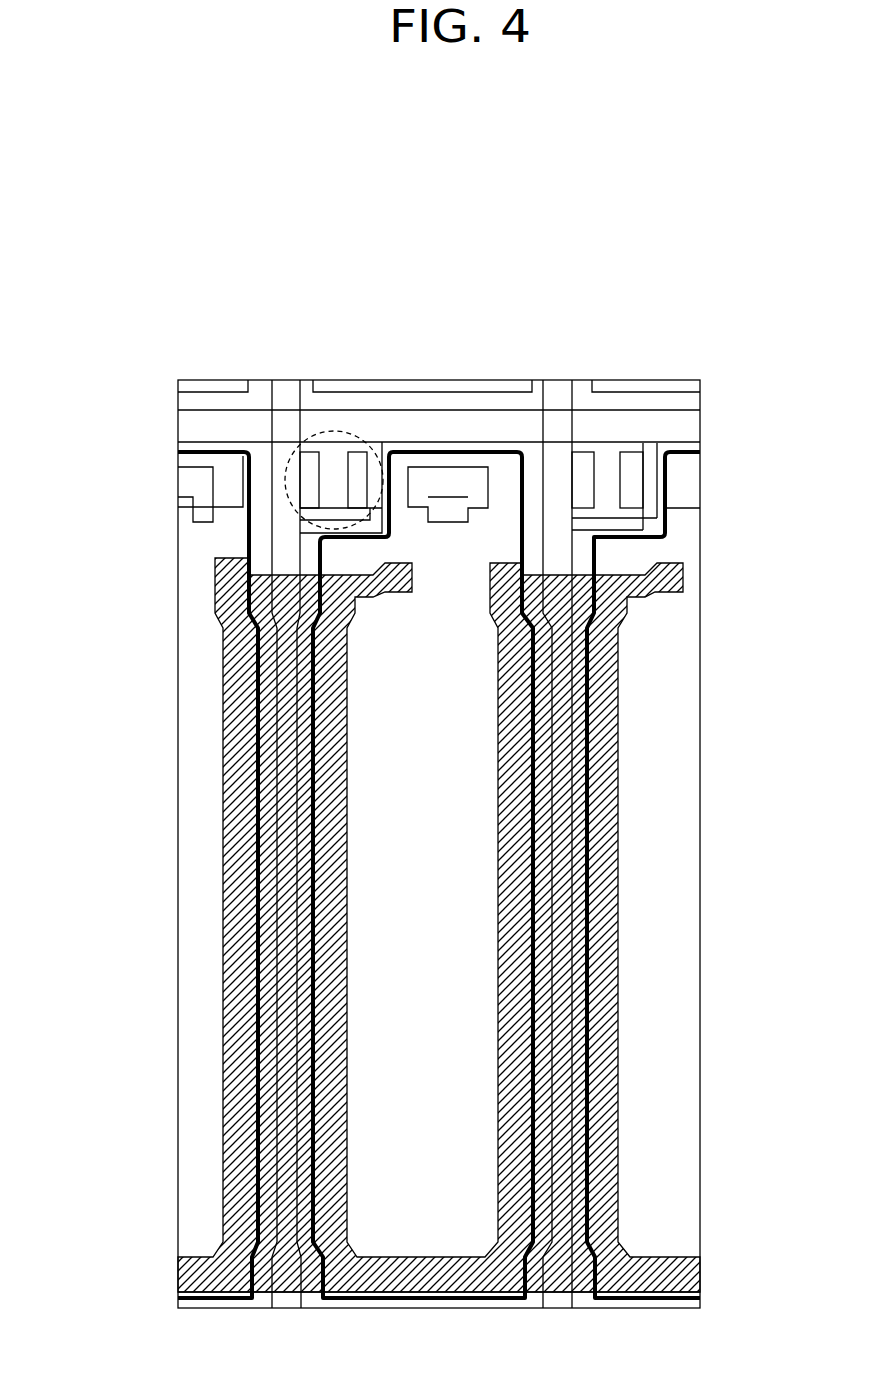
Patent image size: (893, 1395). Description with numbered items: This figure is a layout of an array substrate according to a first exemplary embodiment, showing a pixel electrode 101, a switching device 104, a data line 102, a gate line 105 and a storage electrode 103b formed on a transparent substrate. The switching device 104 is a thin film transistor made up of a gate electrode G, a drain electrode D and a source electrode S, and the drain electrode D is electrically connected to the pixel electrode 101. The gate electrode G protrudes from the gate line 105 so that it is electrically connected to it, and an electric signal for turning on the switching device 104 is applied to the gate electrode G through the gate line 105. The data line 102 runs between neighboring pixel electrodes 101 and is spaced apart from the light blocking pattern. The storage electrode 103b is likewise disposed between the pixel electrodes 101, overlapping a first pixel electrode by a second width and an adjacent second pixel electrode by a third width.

The pixel electrode 101 is at (490, 1052).
The data line 102 is at (282, 1108).
The storage electrode 103b is at (250, 920).
The switching device 104 is at (290, 474).
The gate line 105 is at (675, 425).
The source electrode S is at (303, 455).
The gate electrode G is at (336, 503).
The drain electrode D is at (363, 468).